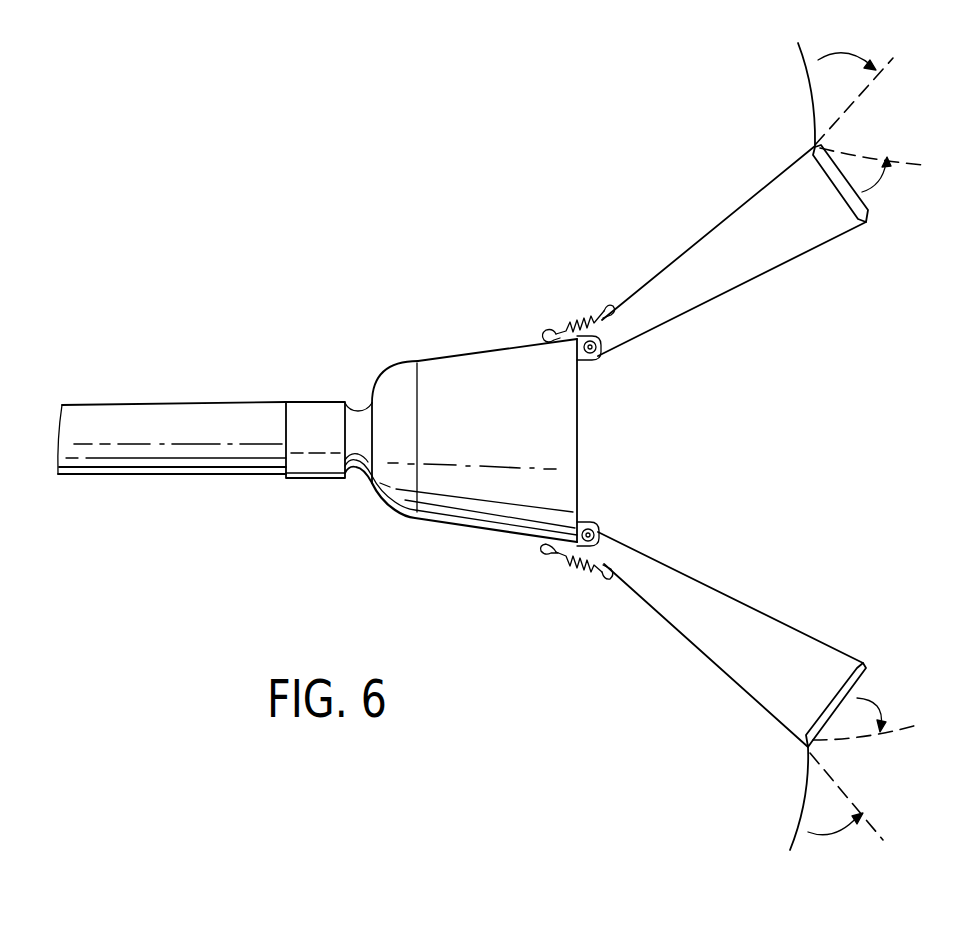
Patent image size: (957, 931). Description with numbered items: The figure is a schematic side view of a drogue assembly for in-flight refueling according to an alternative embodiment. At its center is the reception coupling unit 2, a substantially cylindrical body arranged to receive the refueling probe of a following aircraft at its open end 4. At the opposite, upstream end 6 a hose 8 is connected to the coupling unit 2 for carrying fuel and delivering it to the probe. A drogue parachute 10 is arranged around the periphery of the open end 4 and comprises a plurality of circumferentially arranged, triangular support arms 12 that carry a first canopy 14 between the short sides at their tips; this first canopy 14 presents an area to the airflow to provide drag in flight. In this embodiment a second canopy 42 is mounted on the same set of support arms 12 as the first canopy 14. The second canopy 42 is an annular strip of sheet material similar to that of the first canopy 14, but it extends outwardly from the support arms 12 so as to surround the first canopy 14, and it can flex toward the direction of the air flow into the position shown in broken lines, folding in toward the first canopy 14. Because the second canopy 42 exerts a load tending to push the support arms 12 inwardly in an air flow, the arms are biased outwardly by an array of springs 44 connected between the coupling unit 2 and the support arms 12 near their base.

The reception coupling unit 2 is at (427, 450).
The open end 4 is at (578, 440).
The upstream end 6 is at (393, 396).
The hose 8 is at (251, 453).
The drogue parachute 10 is at (763, 595).
The support arms 12 is at (695, 607).
The first canopy 14 is at (867, 208).
The second canopy 42 is at (813, 90).
The springs 44 is at (577, 317).